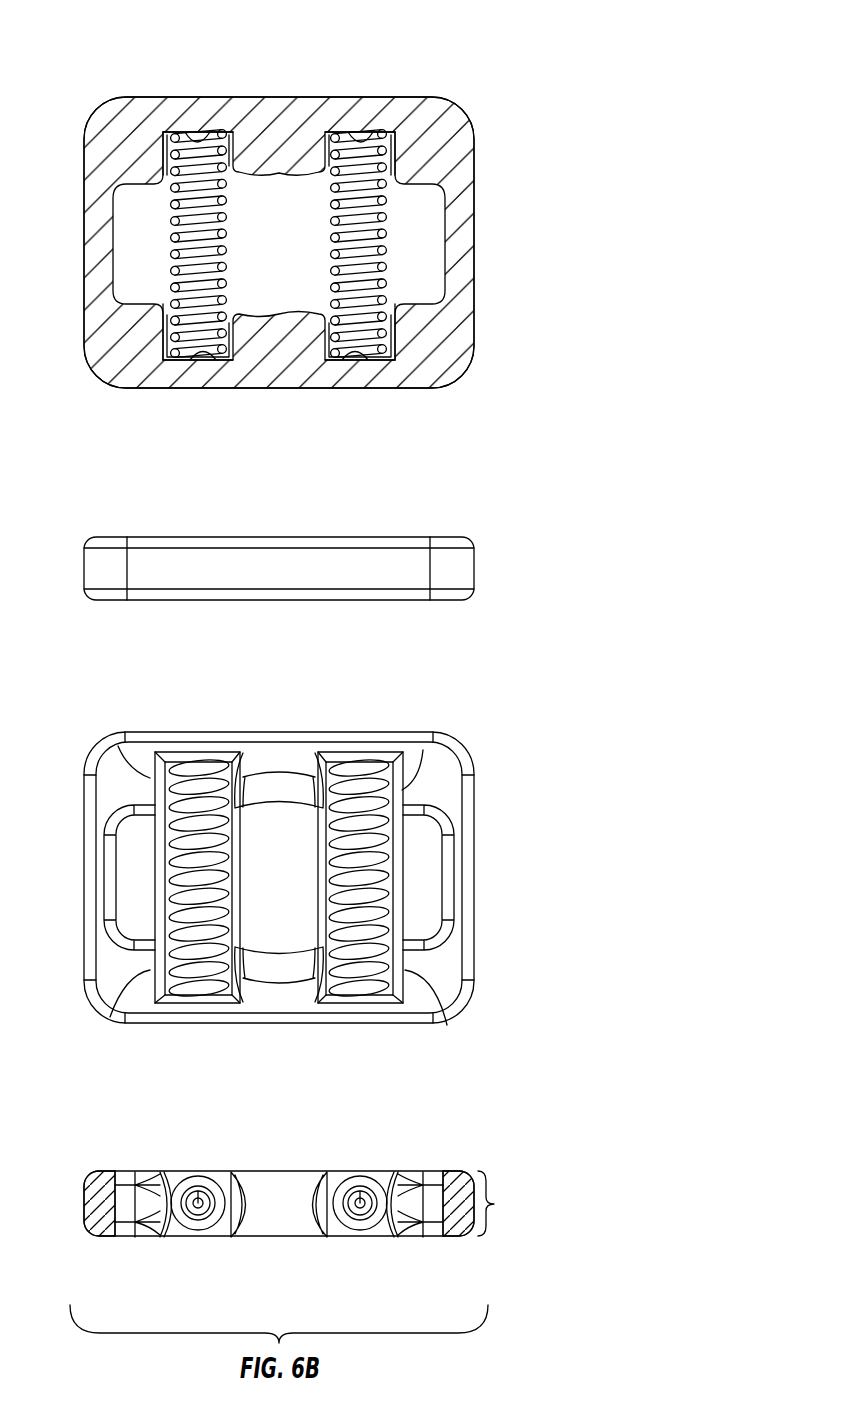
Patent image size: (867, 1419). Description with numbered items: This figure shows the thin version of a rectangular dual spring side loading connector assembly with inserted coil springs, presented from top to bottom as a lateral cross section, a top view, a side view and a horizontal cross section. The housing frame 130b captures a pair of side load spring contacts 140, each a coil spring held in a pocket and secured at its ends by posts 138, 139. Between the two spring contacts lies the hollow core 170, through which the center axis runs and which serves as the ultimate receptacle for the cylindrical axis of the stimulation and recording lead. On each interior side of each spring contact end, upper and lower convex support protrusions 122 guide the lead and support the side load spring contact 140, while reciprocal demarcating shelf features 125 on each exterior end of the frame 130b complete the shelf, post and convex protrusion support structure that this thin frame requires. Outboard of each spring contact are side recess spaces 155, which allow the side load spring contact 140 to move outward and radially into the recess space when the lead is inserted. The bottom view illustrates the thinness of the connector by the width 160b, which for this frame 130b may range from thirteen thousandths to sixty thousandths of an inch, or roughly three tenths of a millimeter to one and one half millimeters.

The housing frame 130b is at (388, 42).
The support protrusions 122 is at (270, 112).
The shelf features 125 is at (158, 160).
The post 138 is at (200, 133).
The post 139 is at (358, 356).
The side load spring contact 140 is at (372, 208).
The side recess spaces 155 is at (420, 257).
The hollow core 170 is at (280, 723).
The width 160b is at (497, 1204).